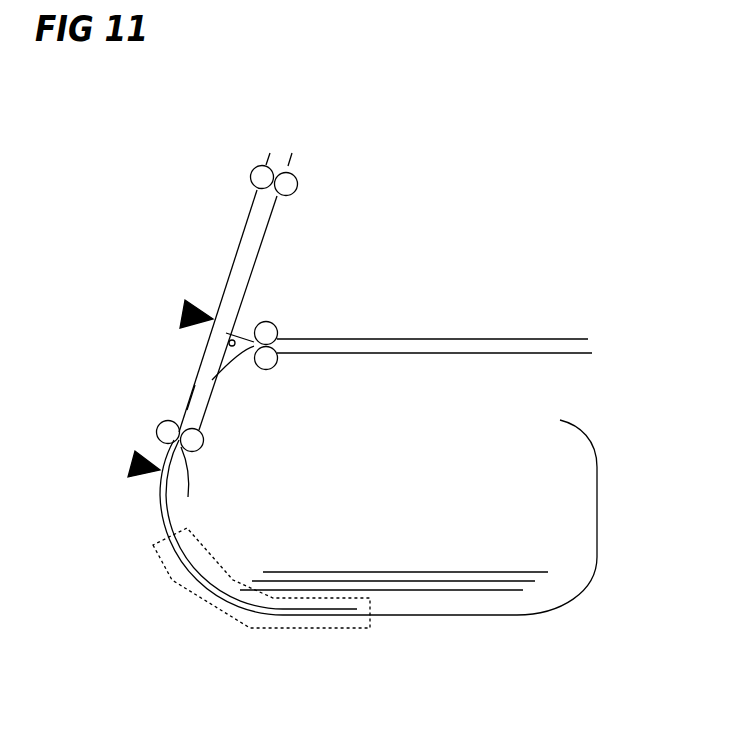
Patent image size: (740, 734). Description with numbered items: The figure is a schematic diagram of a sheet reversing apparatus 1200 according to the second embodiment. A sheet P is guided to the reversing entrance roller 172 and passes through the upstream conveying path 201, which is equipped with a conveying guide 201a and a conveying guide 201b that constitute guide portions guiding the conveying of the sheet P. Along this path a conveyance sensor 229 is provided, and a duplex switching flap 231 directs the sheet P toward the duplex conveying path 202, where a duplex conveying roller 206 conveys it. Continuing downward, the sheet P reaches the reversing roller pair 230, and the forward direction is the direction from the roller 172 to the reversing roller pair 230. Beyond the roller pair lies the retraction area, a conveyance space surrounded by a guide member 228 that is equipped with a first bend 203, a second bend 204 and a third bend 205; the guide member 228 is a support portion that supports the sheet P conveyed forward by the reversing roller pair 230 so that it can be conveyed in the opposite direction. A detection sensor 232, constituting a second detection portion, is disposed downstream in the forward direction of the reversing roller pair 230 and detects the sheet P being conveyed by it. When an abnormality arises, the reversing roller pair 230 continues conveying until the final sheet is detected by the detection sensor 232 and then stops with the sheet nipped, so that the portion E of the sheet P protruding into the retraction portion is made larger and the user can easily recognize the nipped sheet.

The reversing entrance roller 172 is at (252, 167).
The upstream conveying path 201 is at (265, 336).
The conveying guide 201a is at (247, 229).
The conveying guide 201b is at (268, 221).
The conveyance sensor 229 is at (183, 311).
The duplex switching flap 231 is at (237, 335).
The duplex conveying roller 206 is at (272, 323).
The duplex conveying path 202 is at (442, 338).
The sheet reversing apparatus 1200 is at (396, 249).
The reversing roller pair 230 is at (159, 425).
The detection sensor 232 is at (131, 455).
The first bend 203 is at (198, 578).
The portion of sheet protruding into reversing/retraction portion E is at (160, 564).
The guide member 228 is at (437, 615).
The second bend 204 is at (565, 606).
The third bend 205 is at (598, 452).
The sheet P is at (162, 508).